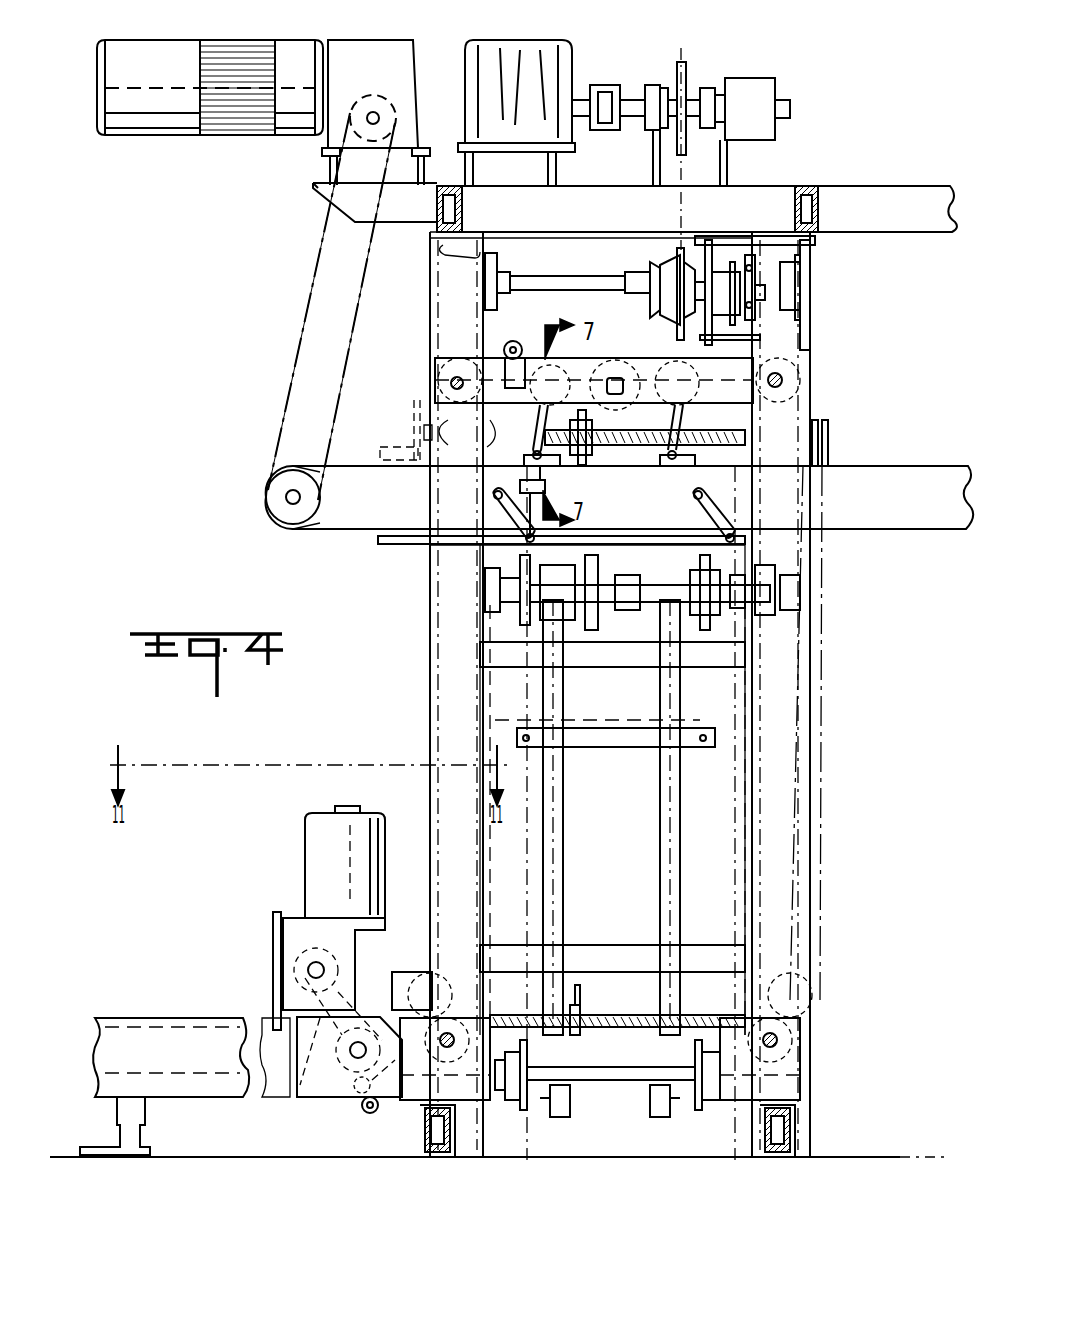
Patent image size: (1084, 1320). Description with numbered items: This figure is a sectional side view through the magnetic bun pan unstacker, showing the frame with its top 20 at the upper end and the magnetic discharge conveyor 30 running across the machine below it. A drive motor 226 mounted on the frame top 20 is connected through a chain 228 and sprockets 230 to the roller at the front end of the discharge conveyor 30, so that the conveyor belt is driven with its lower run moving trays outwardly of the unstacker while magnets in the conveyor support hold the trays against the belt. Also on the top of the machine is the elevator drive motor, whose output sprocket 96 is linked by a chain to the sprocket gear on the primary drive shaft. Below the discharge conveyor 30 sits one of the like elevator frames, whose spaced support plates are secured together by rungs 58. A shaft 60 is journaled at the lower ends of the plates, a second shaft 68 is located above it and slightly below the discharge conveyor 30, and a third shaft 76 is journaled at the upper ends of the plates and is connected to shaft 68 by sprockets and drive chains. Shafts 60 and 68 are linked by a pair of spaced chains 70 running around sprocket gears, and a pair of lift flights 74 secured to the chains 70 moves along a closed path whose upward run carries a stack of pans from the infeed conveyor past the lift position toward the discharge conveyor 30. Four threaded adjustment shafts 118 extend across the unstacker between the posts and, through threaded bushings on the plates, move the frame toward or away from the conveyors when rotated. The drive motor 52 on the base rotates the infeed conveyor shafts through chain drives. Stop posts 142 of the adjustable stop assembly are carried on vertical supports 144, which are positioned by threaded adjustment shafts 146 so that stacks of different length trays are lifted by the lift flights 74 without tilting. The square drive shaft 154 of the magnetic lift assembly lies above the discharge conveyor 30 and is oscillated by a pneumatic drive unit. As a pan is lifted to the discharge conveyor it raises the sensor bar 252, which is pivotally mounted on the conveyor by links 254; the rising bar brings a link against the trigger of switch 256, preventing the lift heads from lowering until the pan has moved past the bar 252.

The top 20 is at (778, 195).
The magnetic discharge conveyor 30 is at (885, 466).
The drive motor 52 is at (343, 875).
The rungs 58 is at (632, 668).
The shafts 60 is at (612, 1075).
The second shaft 68 is at (625, 595).
The chains 70 is at (518, 850).
The lift flights 74 is at (633, 747).
The third shaft 76 is at (560, 278).
The output sprocket 96 is at (688, 62).
The adjustment shafts 118 is at (458, 380).
The stop posts 142 is at (728, 880).
The vertical supports 144 is at (605, 712).
The threaded adjustment shafts 146 is at (733, 447).
The square drive shaft 154 is at (618, 380).
The drive motor 226 is at (383, 45).
The chain 228 is at (362, 328).
The sprockets 230 is at (365, 97).
The sensor bar 252 is at (640, 538).
The links 254 is at (492, 500).
The switch 256 is at (540, 462).